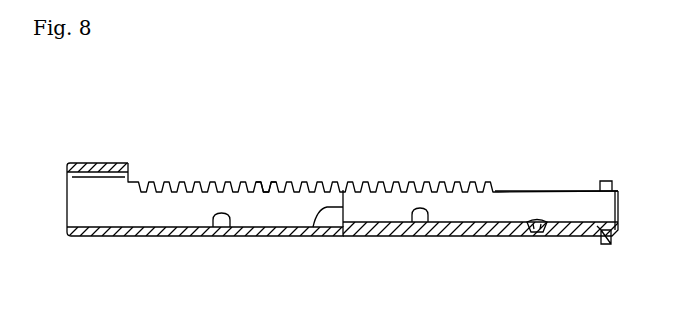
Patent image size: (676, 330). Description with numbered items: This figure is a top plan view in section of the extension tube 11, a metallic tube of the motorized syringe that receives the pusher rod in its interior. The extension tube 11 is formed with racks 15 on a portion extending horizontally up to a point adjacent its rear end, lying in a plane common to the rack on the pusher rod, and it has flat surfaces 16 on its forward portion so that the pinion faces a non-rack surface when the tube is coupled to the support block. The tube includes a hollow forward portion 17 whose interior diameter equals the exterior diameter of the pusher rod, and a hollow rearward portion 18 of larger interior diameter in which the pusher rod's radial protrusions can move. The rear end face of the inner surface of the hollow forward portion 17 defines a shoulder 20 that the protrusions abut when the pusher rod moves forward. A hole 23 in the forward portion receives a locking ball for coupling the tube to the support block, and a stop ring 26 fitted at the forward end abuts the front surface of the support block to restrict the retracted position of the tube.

The extension tube 11 is at (157, 138).
The racks 15 is at (267, 183).
The flat surfaces 16 is at (563, 190).
The hollow forward portion 17 is at (412, 222).
The hollow rearward portion 18 is at (214, 227).
The shoulder 20 is at (315, 230).
The hole 23 is at (538, 232).
The stop ring 26 is at (606, 245).